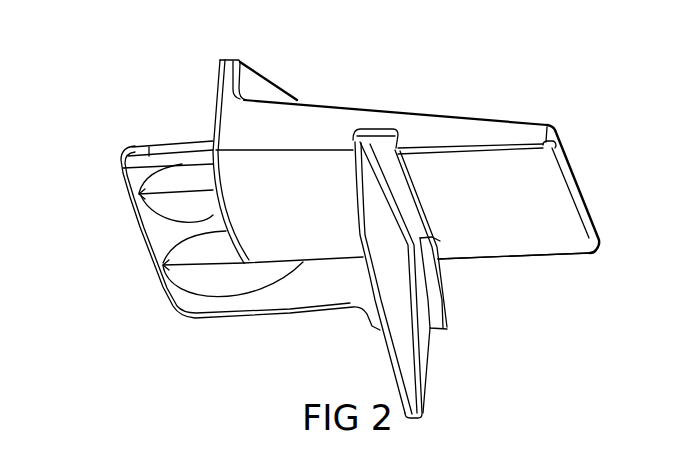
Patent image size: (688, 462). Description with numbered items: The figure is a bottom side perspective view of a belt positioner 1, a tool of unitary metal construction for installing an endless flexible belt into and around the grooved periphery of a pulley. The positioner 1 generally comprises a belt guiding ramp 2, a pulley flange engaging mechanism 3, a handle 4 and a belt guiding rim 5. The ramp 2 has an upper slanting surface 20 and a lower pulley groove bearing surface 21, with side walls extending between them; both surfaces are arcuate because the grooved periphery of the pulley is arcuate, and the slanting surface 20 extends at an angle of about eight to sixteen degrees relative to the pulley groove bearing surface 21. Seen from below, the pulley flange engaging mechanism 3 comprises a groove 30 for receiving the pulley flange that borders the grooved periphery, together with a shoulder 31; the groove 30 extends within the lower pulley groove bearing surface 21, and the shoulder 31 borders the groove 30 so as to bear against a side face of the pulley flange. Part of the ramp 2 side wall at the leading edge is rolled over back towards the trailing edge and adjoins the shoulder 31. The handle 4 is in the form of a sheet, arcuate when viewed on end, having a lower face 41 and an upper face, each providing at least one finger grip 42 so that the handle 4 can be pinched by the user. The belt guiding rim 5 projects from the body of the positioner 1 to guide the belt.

The belt positioner 1 is at (163, 309).
The belt guiding ramp 2 is at (421, 138).
The upper slanting surface 20 is at (327, 103).
The lower pulley groove bearing surface 21 is at (509, 215).
The pulley flange engaging mechanism 3 is at (403, 235).
The groove 30 is at (383, 147).
The shoulder 31 is at (371, 209).
The handle 4 is at (160, 143).
The lower face 41 is at (129, 178).
The finger grip 42 is at (170, 248).
The belt guiding rim 5 is at (222, 61).